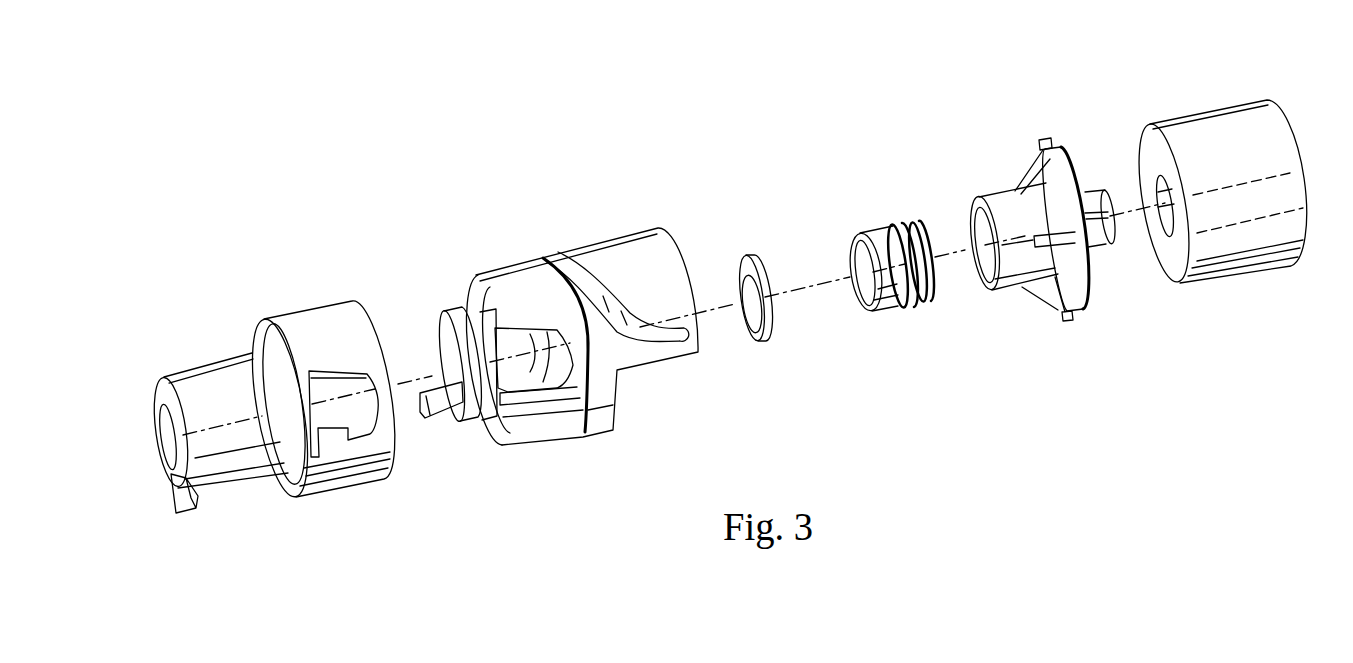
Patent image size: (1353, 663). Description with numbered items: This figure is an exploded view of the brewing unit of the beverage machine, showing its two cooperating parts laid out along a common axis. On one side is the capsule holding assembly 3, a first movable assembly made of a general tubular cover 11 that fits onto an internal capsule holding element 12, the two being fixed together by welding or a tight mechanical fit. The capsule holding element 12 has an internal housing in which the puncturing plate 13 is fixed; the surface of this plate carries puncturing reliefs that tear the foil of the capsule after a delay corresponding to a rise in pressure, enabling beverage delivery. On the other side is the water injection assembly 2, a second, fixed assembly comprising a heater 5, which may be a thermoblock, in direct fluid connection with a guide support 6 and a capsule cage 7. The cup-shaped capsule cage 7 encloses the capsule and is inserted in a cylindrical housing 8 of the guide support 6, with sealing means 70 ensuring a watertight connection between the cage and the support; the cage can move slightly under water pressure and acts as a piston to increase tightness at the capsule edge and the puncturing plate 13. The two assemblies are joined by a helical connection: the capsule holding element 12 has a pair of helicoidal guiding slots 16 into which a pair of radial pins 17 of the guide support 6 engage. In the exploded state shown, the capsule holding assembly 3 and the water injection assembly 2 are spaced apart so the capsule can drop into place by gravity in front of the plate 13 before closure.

The water injection assembly 2 is at (1315, 267).
The capsule holding assembly 3 is at (795, 385).
The heater 5 is at (1218, 108).
The guide support 6 is at (1066, 190).
The capsule cage 7 is at (912, 246).
The cylindrical housing 8 is at (983, 235).
The tubular cover 11 is at (317, 330).
The capsule holding element 12 is at (582, 315).
The puncturing plate 13 is at (753, 257).
The helicoidal guiding slots 16 is at (591, 278).
The radial pins 17 is at (1045, 137).
The sealing means 70 is at (921, 309).